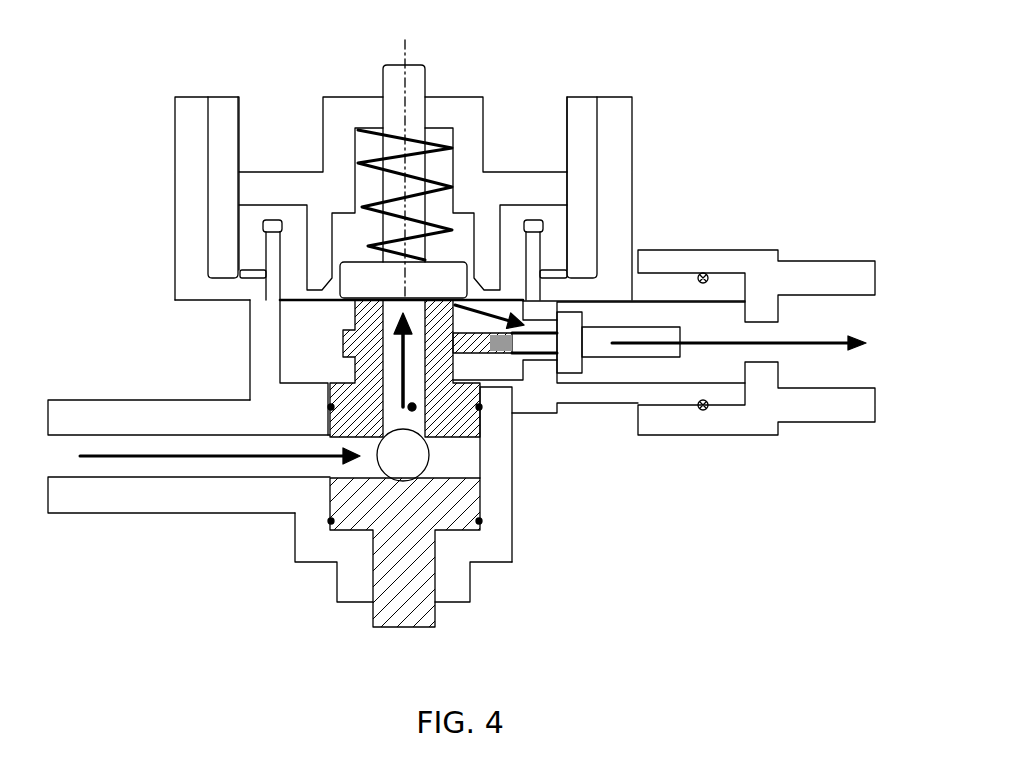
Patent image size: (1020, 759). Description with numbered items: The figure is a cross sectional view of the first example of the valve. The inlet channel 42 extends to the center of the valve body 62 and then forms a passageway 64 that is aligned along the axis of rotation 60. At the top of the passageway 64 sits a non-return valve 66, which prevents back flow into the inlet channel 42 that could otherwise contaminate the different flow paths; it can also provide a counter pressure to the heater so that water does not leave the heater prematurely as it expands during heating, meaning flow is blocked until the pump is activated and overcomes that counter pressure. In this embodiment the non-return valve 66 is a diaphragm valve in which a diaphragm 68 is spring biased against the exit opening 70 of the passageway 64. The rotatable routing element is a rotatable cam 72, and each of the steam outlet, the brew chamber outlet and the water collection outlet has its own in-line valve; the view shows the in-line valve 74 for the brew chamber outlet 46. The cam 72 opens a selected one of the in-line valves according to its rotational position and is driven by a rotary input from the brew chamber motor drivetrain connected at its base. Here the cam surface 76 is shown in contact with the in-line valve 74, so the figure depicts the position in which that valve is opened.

The inlet channel 42 is at (143, 513).
The brew chamber outlet 46 is at (818, 258).
The axis of rotation 60 is at (403, 42).
The valve body 62 is at (247, 353).
The passageway 64 is at (478, 395).
The non-return valve 66 is at (449, 274).
The diaphragm 68 is at (341, 301).
The exit opening 70 is at (397, 299).
The rotatable cam 72 is at (455, 430).
The in-line valve 74 is at (571, 330).
The cam surface 76 is at (490, 355).